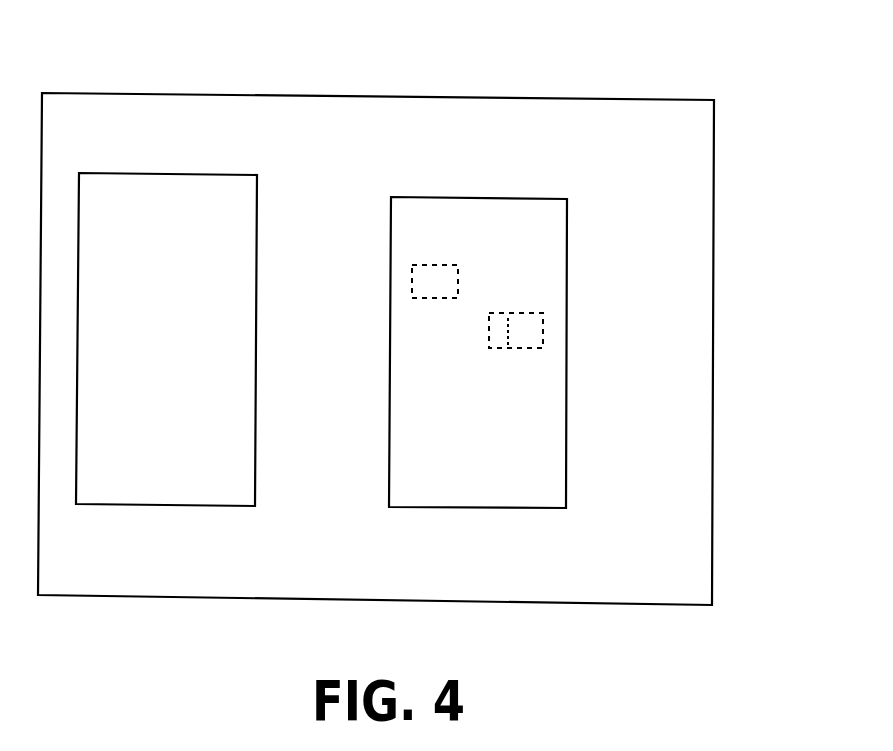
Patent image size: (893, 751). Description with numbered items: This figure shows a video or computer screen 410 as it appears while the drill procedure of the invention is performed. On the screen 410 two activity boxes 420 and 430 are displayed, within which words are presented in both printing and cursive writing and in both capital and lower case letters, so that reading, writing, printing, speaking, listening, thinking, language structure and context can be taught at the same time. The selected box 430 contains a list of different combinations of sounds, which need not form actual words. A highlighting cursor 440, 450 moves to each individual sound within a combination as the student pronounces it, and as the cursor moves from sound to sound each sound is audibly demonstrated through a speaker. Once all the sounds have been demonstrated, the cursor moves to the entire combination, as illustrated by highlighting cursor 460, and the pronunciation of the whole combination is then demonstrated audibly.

The computer screen 410 is at (714, 128).
The activity box 420 is at (230, 174).
The selected box 430 is at (518, 199).
The highlighting cursor 440 is at (490, 355).
The highlighting cursor 450 is at (547, 355).
The highlighting cursor 460 is at (442, 262).